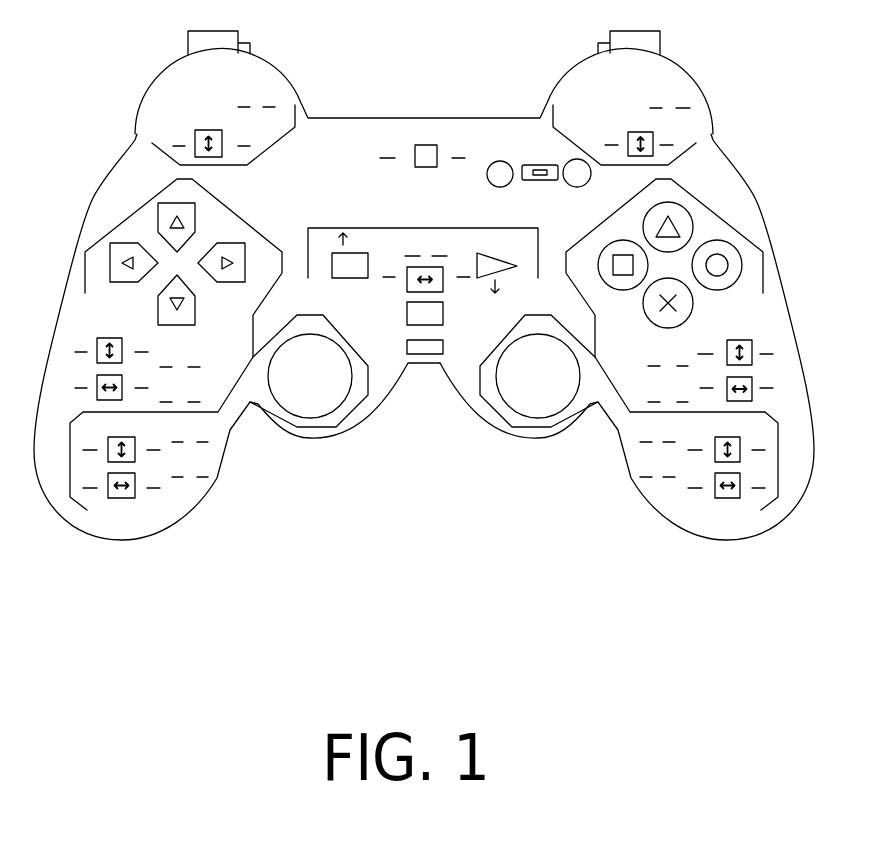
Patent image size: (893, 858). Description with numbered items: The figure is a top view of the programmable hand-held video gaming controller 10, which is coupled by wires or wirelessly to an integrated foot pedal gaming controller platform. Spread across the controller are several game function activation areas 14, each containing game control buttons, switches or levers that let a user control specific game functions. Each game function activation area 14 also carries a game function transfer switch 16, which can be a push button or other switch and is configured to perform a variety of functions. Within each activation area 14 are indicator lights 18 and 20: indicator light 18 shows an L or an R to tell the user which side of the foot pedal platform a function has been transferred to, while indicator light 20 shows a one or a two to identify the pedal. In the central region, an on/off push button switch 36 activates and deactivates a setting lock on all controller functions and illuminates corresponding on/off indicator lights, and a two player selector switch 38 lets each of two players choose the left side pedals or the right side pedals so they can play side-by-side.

The programmable hand-held video gaming controller 10 is at (341, 481).
The game function activation area 14 is at (163, 117).
The game function transfer switch 16 is at (200, 130).
The indicator light 18 is at (280, 83).
The indicator light 20 is at (658, 127).
The on/off push button switch 36 is at (427, 143).
The two player selector switch 38 is at (548, 163).